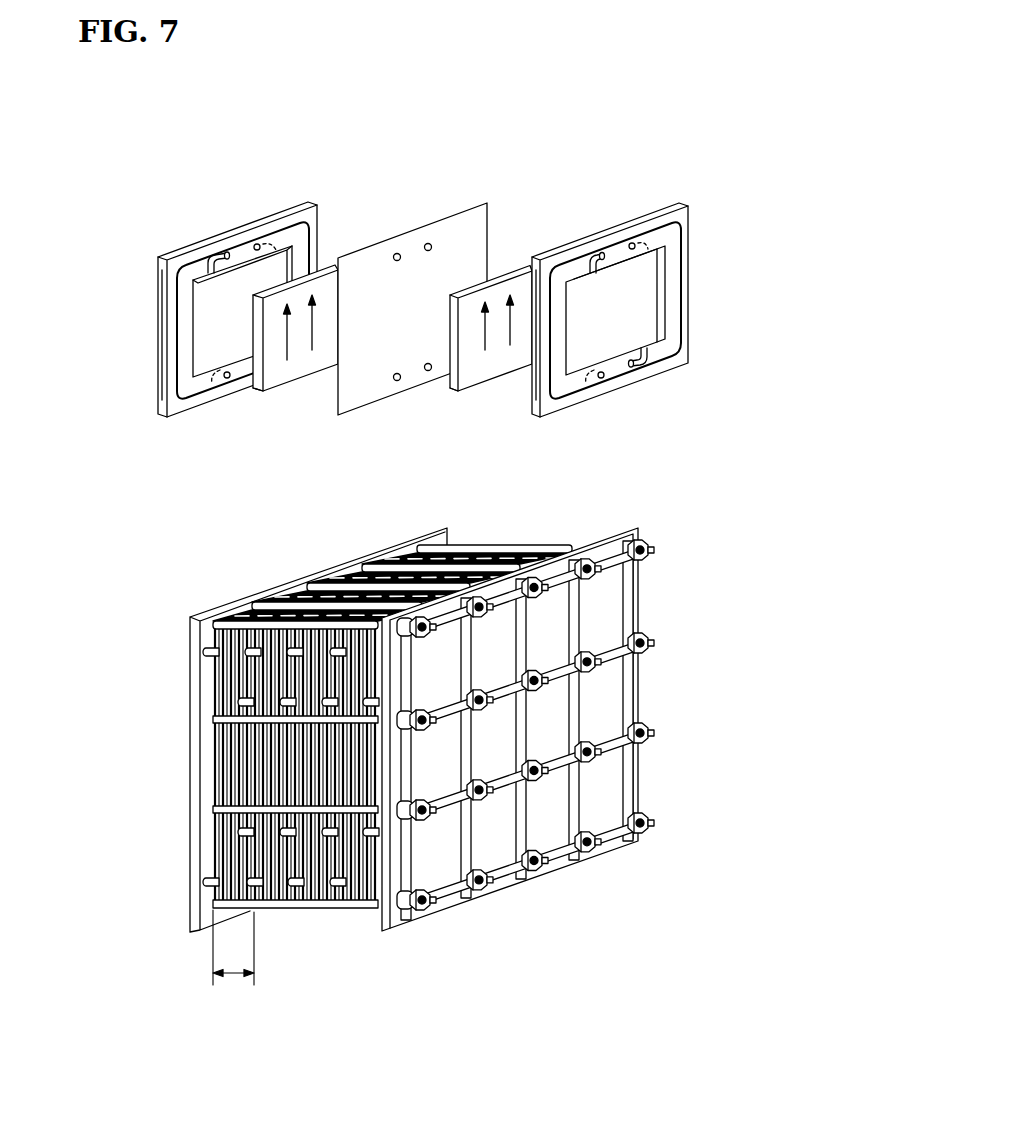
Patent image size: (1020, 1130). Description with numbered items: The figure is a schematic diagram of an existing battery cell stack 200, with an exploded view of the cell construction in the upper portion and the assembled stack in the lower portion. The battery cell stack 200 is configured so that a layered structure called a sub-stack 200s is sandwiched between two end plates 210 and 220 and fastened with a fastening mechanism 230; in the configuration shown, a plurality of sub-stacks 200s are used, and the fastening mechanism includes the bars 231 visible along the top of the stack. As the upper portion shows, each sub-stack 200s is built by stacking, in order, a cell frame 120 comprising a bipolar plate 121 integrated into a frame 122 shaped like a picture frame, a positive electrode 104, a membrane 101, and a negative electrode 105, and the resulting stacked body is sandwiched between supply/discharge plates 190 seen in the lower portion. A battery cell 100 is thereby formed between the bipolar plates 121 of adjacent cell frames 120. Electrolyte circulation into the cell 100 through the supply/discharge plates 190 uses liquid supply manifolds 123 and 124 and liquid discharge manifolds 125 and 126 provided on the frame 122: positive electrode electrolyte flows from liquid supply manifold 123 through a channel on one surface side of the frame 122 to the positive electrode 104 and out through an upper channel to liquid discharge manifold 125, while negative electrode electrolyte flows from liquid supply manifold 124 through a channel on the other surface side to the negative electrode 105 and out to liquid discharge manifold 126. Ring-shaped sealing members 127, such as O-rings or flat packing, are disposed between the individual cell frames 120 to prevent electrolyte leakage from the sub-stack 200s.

The battery cell 100 is at (427, 315).
The membrane 101 is at (412, 274).
The positive electrode 104 is at (295, 360).
The negative electrode 105 is at (480, 363).
The cell frame 120 is at (427, 303).
The bipolar plate 121 is at (425, 316).
The frame 122 is at (425, 334).
The liquid supply manifold 123 is at (696, 381).
The liquid supply manifold 124 is at (433, 416).
The liquid discharge manifold 125 is at (360, 213).
The liquid discharge manifold 126 is at (462, 197).
The ring-shaped sealing member 127 is at (429, 305).
The supply/discharge plate 190 is at (247, 796).
The battery cell stack 200 is at (423, 772).
The sub-stack 200s is at (232, 969).
The end plate 210 is at (549, 730).
The end plate 220 is at (256, 730).
The fastening mechanism 230 is at (330, 572).
The bar 231 is at (330, 572).